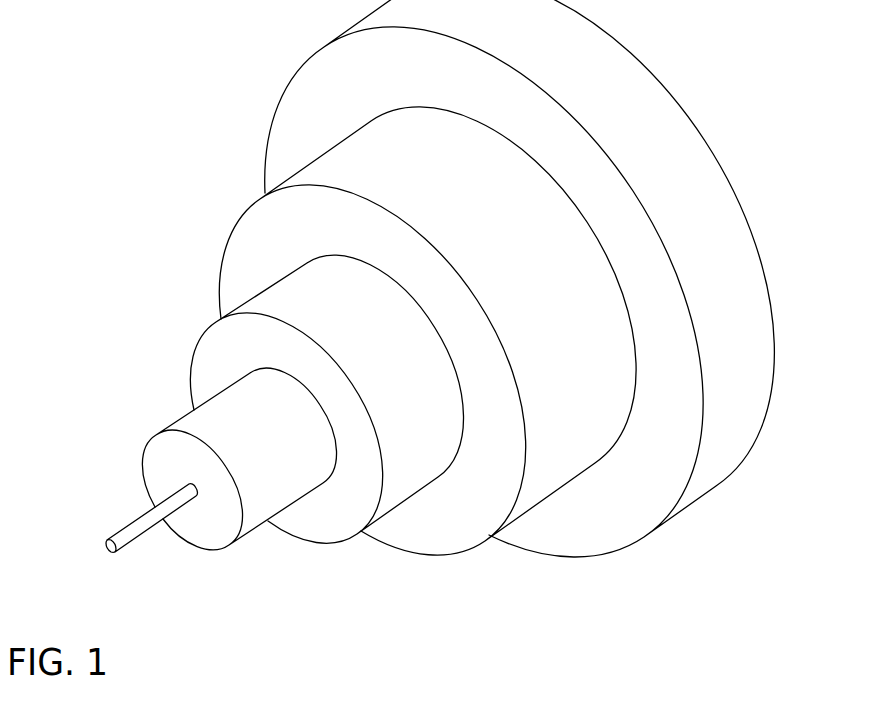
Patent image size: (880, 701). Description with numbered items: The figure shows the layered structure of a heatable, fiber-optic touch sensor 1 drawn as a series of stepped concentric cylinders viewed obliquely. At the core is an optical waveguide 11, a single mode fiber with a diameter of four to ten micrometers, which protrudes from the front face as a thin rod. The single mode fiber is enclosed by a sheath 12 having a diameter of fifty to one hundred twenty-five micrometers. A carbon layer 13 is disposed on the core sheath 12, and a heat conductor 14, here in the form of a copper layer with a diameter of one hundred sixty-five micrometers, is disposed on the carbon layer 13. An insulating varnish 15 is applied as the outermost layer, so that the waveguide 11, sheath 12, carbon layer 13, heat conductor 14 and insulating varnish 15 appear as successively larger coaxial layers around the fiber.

The heatable, fiber-optic touch sensor 1 is at (414, 306).
The optical waveguide 11 is at (137, 528).
The sheath 12 is at (261, 488).
The carbon layer 13 is at (337, 503).
The heat conductor 14 is at (466, 508).
The insulating varnish 15 is at (601, 525).